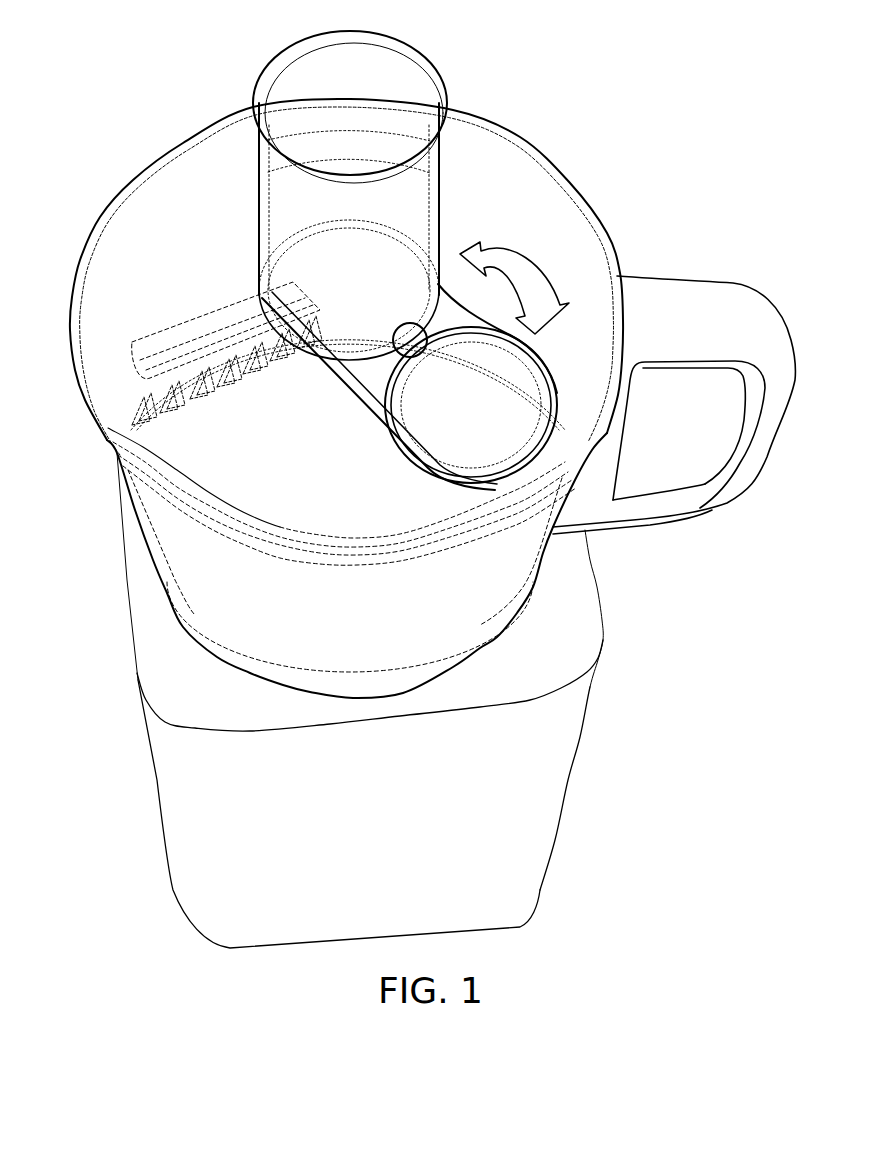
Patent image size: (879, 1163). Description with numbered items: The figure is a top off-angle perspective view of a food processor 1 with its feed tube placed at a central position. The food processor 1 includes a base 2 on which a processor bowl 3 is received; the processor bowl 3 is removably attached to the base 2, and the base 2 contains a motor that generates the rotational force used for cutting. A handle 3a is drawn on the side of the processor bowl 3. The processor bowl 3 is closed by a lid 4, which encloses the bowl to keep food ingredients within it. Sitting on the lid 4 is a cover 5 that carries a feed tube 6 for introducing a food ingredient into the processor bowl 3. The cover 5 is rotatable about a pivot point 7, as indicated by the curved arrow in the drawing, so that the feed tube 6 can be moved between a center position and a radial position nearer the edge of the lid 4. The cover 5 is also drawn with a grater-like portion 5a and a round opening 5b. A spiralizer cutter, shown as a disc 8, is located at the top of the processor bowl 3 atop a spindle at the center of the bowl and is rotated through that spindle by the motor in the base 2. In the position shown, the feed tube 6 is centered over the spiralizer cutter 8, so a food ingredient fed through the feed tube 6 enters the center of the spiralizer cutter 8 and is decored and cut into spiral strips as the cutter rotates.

The food processor 1 is at (110, 98).
The base 2 is at (163, 750).
The processor bowl 3 is at (190, 613).
The handle 3a is at (648, 501).
The lid 4 is at (527, 173).
The cover 5 is at (368, 381).
The grater blade 5a is at (300, 323).
The disc opening 5b is at (493, 427).
The feed tube 6 is at (403, 52).
The pivot point 7 is at (370, 383).
The spiralizer cutter 8 is at (180, 260).